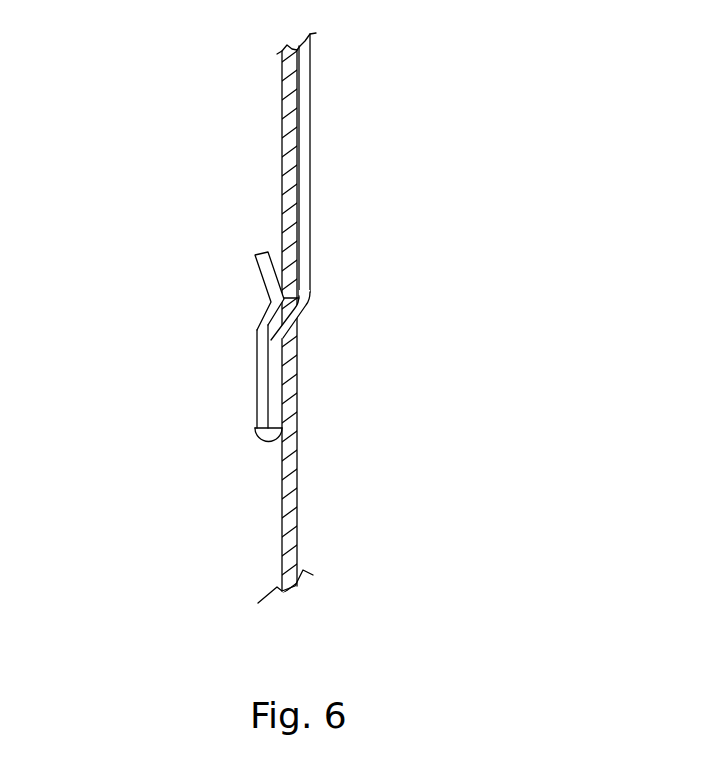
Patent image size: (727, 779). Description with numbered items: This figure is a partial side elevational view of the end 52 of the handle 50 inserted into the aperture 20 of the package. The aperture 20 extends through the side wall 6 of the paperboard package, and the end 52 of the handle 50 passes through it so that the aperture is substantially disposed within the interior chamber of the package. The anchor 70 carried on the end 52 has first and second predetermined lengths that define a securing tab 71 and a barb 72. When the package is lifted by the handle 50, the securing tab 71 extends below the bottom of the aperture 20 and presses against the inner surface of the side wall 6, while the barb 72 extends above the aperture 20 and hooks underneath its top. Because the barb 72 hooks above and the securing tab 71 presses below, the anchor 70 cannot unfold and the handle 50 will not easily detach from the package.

The side wall 6 is at (290, 423).
The handle 50 is at (310, 92).
The end of handle 52 is at (300, 315).
The aperture 20 is at (328, 348).
The anchor 70 is at (160, 293).
The securing tab 71 is at (257, 372).
The barb 72 is at (252, 257).